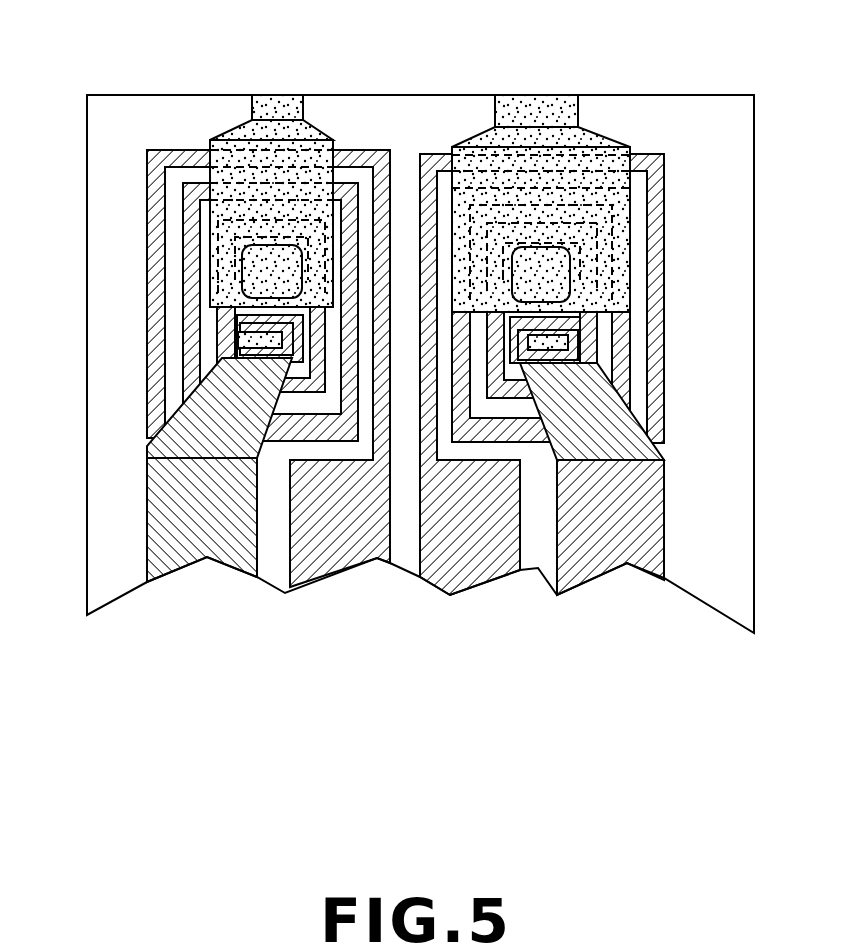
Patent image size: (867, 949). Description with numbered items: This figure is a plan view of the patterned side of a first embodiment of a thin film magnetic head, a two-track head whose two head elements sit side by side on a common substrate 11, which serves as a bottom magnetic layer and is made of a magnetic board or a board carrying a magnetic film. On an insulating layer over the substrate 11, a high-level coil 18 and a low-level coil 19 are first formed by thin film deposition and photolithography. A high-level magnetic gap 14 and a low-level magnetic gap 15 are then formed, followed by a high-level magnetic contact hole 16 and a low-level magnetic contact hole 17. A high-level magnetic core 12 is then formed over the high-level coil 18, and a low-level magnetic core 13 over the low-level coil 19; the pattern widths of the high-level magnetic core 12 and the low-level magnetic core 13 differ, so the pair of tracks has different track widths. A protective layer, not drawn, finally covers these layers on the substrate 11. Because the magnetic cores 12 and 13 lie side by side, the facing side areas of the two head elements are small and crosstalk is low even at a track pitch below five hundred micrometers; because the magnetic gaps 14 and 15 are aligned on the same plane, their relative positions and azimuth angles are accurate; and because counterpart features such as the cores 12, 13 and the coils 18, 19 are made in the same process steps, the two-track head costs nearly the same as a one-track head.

The substrate 11 is at (693, 583).
The high-level magnetic core 12 is at (235, 148).
The low-level magnetic core 13 is at (485, 167).
The high-level magnetic gap 14 is at (285, 95).
The low-level magnetic gap 15 is at (555, 95).
The high-level magnetic contact hole 16 is at (257, 273).
The low-level magnetic contact hole 17 is at (560, 272).
The high-level coil 18 is at (148, 383).
The low-level coil 19 is at (665, 388).